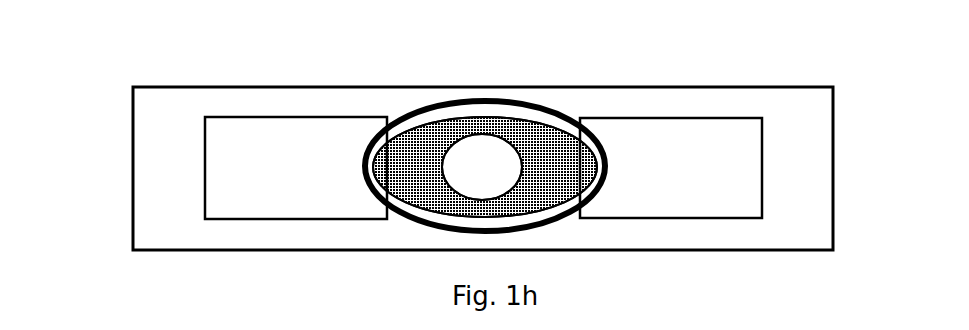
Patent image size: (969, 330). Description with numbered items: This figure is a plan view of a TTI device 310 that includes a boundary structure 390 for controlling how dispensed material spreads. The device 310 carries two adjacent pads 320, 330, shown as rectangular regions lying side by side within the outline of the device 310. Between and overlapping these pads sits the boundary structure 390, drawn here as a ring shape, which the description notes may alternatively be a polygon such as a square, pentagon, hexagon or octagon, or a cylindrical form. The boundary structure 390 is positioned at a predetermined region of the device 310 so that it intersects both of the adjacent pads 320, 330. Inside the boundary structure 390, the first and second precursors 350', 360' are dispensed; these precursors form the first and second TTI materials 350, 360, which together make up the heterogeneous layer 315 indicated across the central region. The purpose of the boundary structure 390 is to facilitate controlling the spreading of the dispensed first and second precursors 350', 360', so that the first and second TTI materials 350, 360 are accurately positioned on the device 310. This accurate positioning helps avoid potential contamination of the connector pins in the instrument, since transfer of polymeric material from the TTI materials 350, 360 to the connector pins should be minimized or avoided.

The device 310 is at (128, 75).
The heterogeneous layer 315 is at (607, 75).
The pad 320 is at (225, 158).
The pad 330 is at (750, 168).
The first TTI material 350 is at (421, 123).
The first precursor 350' is at (443, 133).
The second TTI material 360 is at (588, 112).
The second precursor 360' is at (554, 123).
The boundary structure 390 is at (552, 223).